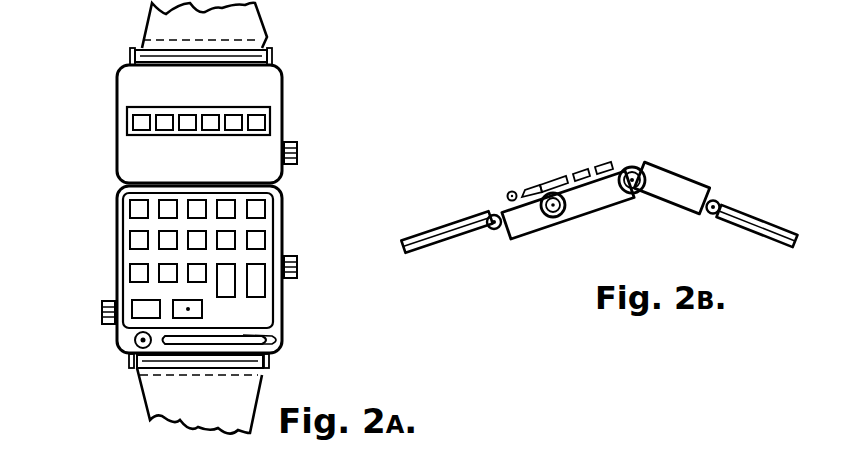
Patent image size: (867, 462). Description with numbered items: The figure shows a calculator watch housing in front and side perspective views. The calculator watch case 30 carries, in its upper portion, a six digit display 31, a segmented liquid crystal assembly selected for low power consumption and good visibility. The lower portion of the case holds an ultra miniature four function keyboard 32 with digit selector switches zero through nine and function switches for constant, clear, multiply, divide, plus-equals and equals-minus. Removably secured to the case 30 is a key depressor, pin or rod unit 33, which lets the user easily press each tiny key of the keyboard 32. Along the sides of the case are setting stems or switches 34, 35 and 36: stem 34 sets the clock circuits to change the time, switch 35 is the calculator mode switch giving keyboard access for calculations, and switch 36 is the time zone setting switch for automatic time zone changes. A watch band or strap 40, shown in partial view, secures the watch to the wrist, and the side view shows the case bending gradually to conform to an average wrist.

In FIG. 2A, the calculator watch case 30 is at (263, 150).
In FIG. 2B, the calculator watch case 30 is at (597, 210).
In FIG. 2A, the six digit display 31 is at (267, 118).
In FIG. 2A, the keyboard 32 is at (265, 260).
In FIG. 2B, the keyboard 32 is at (557, 177).
In FIG. 2A, the key depressor, pin or rod unit 33 is at (280, 345).
In FIG. 2B, the key depressor, pin or rod unit 33 is at (508, 192).
In FIG. 2A, the setting stem 34 is at (297, 153).
In FIG. 2B, the setting stem 34 is at (635, 167).
In FIG. 2A, the calculator mode switch 35 is at (297, 270).
In FIG. 2B, the calculator mode switch 35 is at (550, 218).
In FIG. 2A, the time zone setting switch 36 is at (102, 323).
In FIG. 2A, the watch band or strap 40 is at (247, 33).
In FIG. 2B, the watch band or strap 40 is at (453, 243).